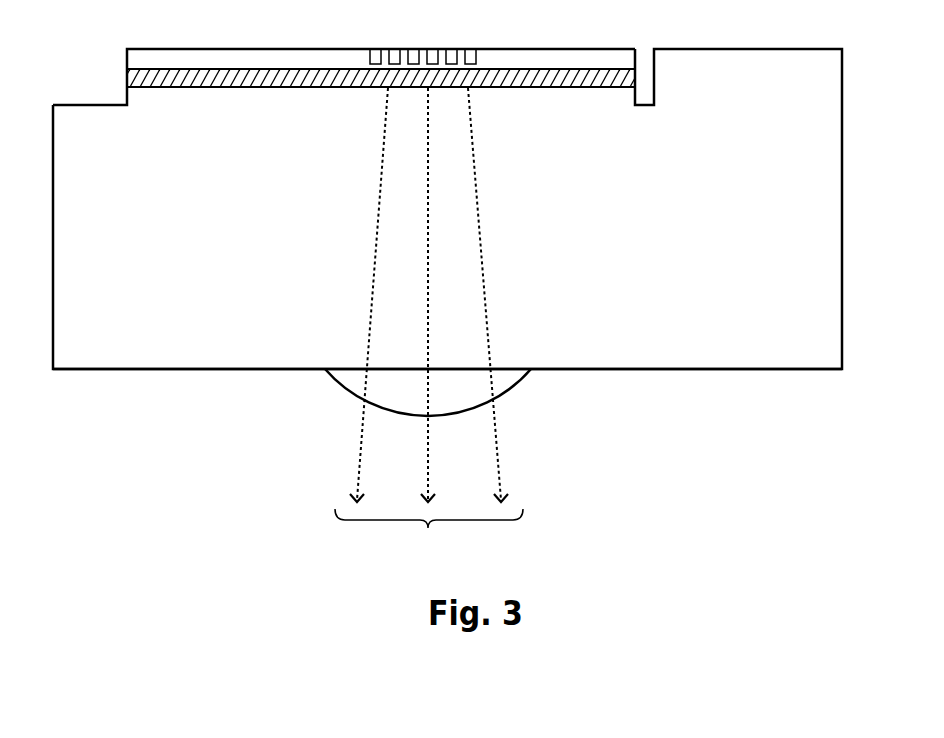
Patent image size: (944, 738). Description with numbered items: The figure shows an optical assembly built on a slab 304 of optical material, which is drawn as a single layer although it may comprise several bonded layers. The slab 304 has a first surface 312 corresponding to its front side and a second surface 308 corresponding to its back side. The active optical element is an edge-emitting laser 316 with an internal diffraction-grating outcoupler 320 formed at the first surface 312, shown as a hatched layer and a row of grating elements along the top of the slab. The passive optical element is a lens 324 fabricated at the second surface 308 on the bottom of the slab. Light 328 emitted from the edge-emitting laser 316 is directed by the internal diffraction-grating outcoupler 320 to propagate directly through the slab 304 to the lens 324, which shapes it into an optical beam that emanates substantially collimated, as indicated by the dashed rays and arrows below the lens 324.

The slab 304 is at (447, 209).
The second surface 308 is at (165, 370).
The first surface 312 is at (100, 104).
The edge-emitting laser 316 is at (275, 82).
The internal diffraction-grating outcoupler 320 is at (427, 49).
The lens 324 is at (523, 390).
The light 328 is at (429, 323).